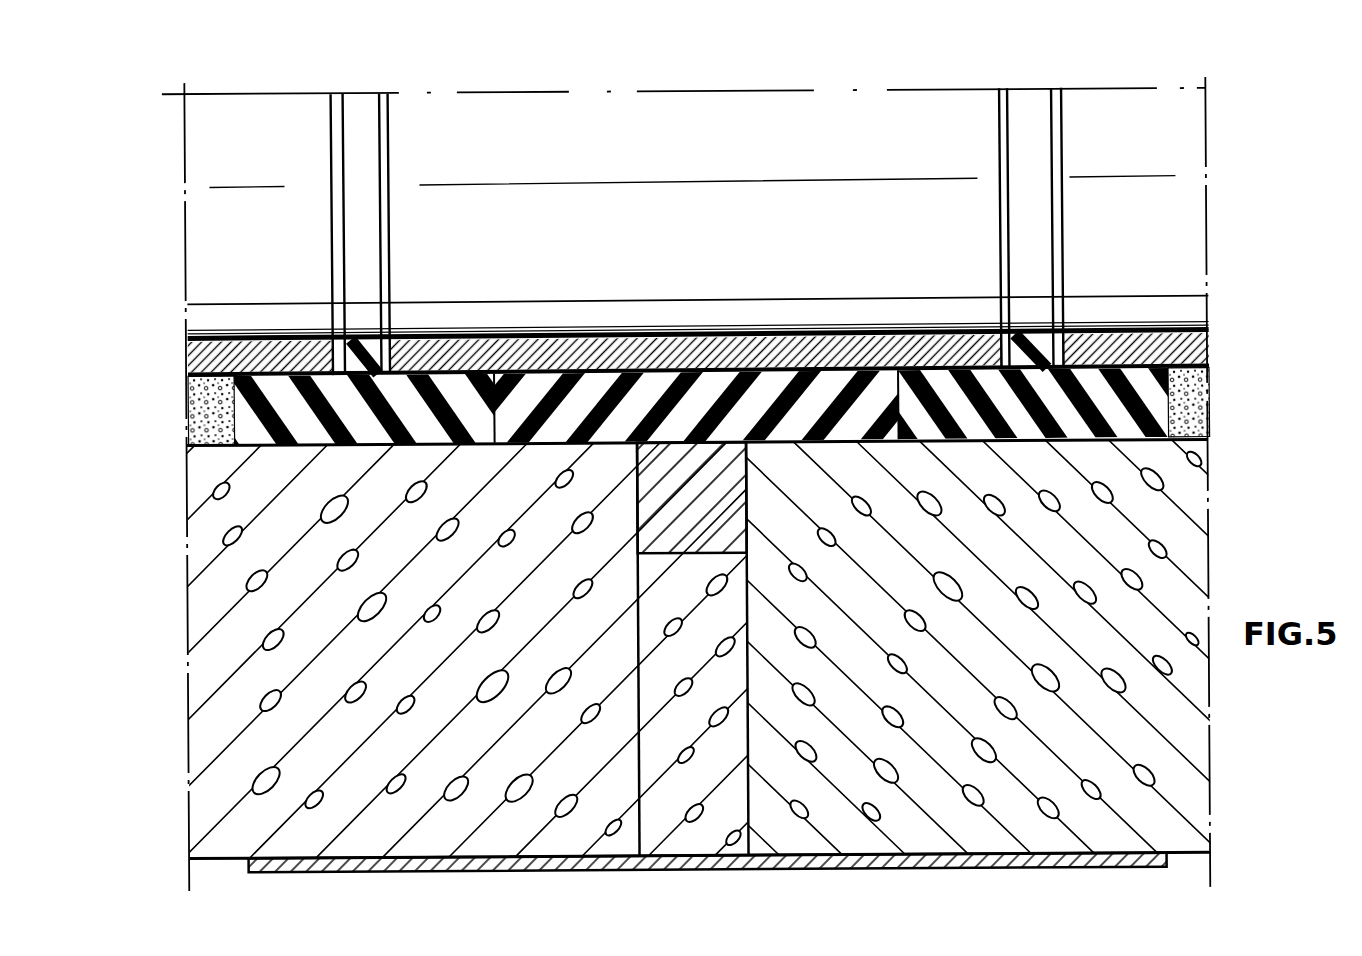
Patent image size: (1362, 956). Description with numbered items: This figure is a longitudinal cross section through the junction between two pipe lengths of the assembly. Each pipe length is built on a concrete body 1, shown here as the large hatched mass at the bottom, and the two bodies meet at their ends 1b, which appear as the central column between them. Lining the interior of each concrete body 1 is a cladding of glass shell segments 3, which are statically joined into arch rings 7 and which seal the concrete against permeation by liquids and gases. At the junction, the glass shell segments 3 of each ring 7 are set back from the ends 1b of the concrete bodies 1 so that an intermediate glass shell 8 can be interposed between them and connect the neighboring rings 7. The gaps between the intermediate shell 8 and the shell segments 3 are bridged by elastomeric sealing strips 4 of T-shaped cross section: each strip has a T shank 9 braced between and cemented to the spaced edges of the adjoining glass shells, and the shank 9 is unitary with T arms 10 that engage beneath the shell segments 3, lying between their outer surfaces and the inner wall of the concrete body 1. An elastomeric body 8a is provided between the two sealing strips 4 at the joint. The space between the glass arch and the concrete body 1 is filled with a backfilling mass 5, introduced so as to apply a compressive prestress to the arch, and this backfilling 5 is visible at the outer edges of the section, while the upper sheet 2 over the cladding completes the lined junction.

The concrete body 1 is at (253, 737).
The ends of the concrete bodies 1b is at (642, 496).
The top cover sheet 2 is at (1178, 305).
The glass shell segments 3 is at (215, 357).
The sealing strips 4 is at (701, 273).
The backfilling mass 5 is at (220, 412).
The arch rings 7 is at (226, 131).
The intermediate glass shell 8 is at (757, 348).
The elastomeric body 8a is at (665, 395).
The T shank 9 is at (356, 352).
The T arms 10 is at (284, 425).